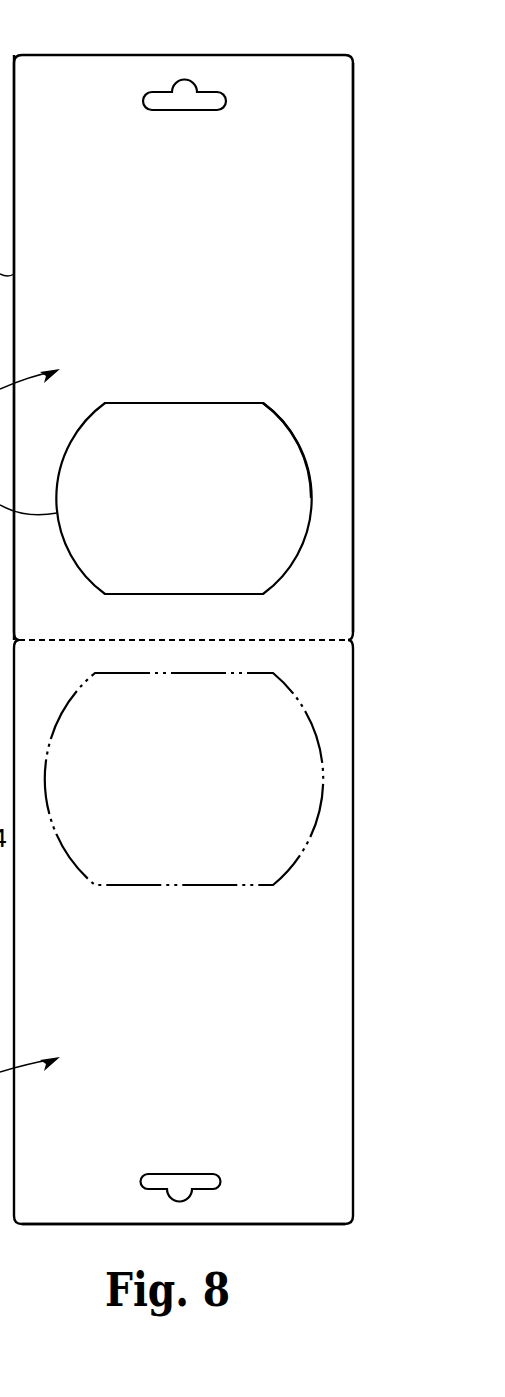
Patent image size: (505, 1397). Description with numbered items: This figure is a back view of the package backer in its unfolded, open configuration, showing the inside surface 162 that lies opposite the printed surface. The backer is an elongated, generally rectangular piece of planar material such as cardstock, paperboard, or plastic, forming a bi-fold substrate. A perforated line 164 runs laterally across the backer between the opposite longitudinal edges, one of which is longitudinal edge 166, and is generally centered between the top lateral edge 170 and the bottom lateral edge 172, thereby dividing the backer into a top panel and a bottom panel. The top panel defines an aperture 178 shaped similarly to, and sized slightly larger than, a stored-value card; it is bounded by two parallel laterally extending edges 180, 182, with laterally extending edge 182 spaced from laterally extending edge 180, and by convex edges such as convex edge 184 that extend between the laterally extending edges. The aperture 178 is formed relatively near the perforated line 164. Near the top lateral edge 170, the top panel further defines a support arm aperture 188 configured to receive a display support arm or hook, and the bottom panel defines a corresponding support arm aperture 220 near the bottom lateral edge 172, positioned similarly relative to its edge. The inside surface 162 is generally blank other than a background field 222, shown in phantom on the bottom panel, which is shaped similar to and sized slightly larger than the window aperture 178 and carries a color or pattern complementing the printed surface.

The inside surface 162 is at (290, 222).
The perforated line 164 is at (323, 639).
The longitudinal edge 166 is at (353, 340).
The top lateral edge 170 is at (292, 55).
The bottom lateral edge 172 is at (55, 1228).
The aperture 178 is at (243, 510).
The laterally extending edge 180 is at (248, 403).
The laterally extending edge 182 is at (254, 594).
The convex edge 184 is at (303, 450).
The support arm aperture 188 is at (190, 88).
The support arm aperture 220 is at (217, 1181).
The background field 222 is at (315, 728).